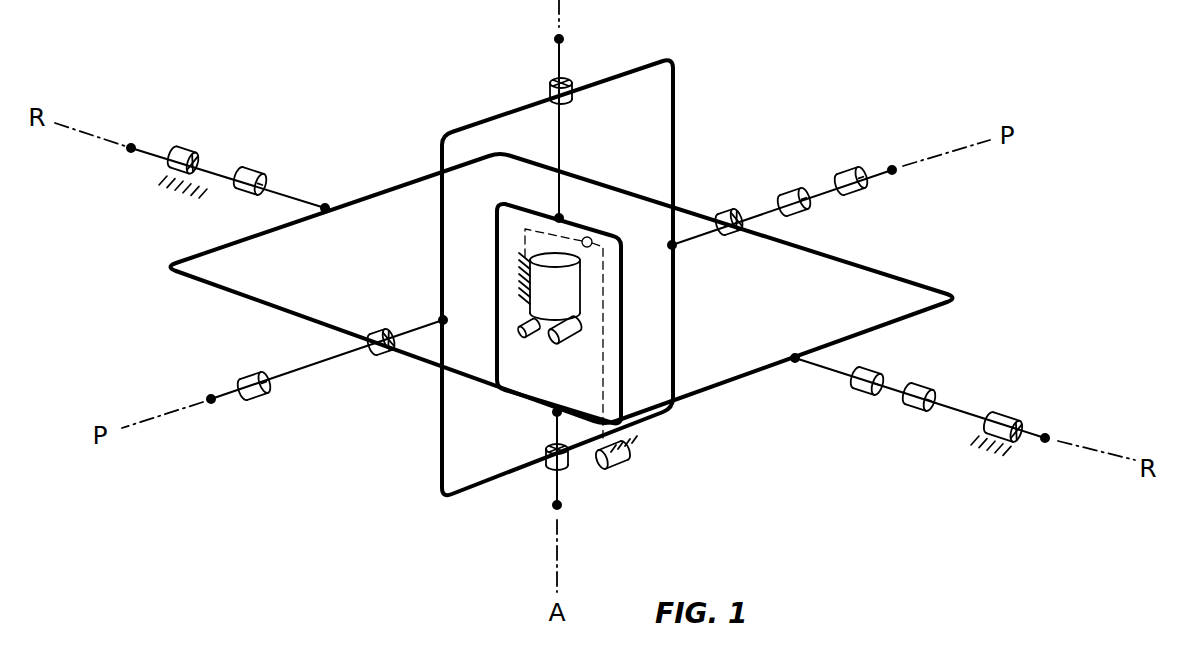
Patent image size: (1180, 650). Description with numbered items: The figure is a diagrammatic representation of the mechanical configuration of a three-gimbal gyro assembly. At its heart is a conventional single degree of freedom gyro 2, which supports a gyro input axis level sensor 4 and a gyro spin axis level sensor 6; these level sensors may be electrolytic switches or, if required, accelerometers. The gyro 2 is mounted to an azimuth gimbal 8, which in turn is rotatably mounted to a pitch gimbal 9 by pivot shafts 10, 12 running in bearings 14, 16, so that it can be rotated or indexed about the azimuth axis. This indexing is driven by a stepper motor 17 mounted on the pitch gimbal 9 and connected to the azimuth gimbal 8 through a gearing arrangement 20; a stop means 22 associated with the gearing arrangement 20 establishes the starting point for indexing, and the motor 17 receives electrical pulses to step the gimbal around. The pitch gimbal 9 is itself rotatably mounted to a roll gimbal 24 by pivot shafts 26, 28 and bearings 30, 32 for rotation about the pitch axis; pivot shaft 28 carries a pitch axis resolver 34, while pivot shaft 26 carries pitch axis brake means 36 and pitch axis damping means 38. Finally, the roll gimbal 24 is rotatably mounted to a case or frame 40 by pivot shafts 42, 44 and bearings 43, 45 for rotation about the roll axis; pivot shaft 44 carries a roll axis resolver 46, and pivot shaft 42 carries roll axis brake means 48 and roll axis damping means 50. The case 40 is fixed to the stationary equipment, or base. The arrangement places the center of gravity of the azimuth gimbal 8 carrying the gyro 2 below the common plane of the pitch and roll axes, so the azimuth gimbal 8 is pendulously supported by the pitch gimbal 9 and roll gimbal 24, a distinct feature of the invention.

The gyro 2 is at (548, 303).
The gyro input axis level sensor 4 is at (522, 340).
The gyro spin axis level sensor 6 is at (552, 343).
The azimuth gimbal 8 is at (622, 268).
The pitch gimbal 9 is at (674, 118).
The pivot shaft 10 is at (562, 137).
The pivot shaft 12 is at (553, 432).
The bearing 14 is at (570, 80).
The bearing 16 is at (550, 470).
The stepper motor 17 is at (617, 470).
The gearing arrangement 20 is at (617, 313).
The stop means 22 is at (590, 236).
The roll gimbal 24 is at (899, 272).
The pivot shaft 26 is at (702, 237).
The pivot shaft 28 is at (413, 327).
The bearing 30 is at (731, 210).
The bearing 32 is at (380, 357).
The pitch axis resolver 34 is at (262, 400).
The pitch axis brake means 36 is at (795, 188).
The pitch axis damping means 38 is at (850, 168).
The case or frame 40 is at (158, 173).
The pivot shaft 42 is at (815, 366).
The bearing 43 is at (1010, 413).
The pivot shaft 44 is at (298, 196).
The bearing 45 is at (180, 147).
The roll axis resolver 46 is at (255, 166).
The roll axis brake means 48 is at (860, 395).
The roll axis damping means 50 is at (915, 410).